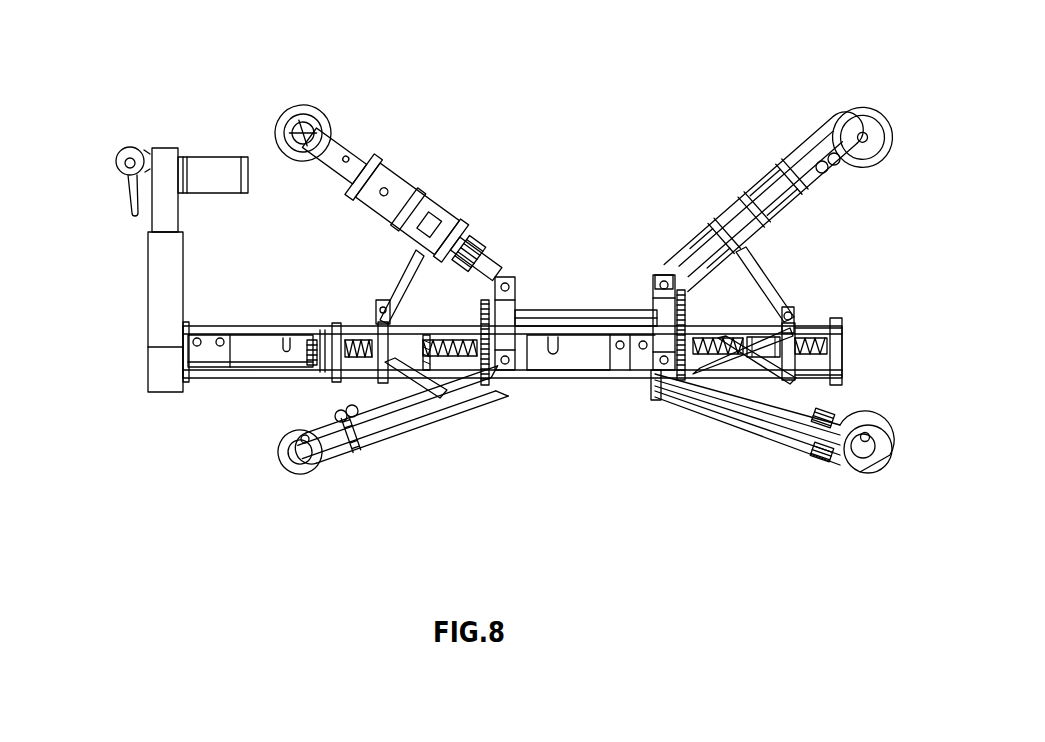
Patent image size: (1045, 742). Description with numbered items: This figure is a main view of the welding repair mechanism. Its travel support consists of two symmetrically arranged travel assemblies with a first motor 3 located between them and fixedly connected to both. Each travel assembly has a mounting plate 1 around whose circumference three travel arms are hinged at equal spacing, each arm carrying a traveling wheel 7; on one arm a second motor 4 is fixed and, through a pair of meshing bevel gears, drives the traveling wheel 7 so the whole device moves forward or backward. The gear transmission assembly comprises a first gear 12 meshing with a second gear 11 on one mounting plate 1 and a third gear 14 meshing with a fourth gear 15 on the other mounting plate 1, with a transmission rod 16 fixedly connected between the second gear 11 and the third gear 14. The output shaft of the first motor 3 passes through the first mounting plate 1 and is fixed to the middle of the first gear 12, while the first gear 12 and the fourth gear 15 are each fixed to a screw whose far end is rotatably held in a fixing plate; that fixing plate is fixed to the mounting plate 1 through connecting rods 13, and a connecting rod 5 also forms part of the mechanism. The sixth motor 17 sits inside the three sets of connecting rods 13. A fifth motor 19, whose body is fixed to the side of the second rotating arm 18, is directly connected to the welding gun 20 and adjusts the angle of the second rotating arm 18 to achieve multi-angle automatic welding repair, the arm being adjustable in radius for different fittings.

The mounting plate 1 is at (753, 396).
The first motor 3 is at (577, 431).
The second motor 4 is at (801, 170).
The connecting rod 5 is at (838, 240).
The traveling wheel 7 is at (889, 469).
The second gear 11 is at (391, 438).
The first gear 12 is at (444, 413).
The connecting rod 13 is at (861, 319).
The third gear 14 is at (619, 158).
The fourth gear 15 is at (636, 401).
The transmission rod 16 is at (416, 176).
The sixth motor 17 is at (174, 431).
The second rotating arm 18 is at (109, 270).
The fifth motor 19 is at (141, 110).
The welding gun 20 is at (92, 159).